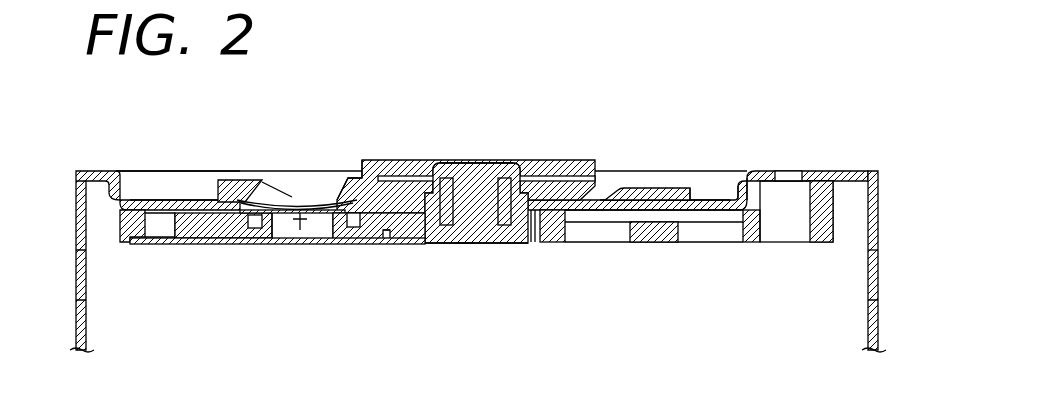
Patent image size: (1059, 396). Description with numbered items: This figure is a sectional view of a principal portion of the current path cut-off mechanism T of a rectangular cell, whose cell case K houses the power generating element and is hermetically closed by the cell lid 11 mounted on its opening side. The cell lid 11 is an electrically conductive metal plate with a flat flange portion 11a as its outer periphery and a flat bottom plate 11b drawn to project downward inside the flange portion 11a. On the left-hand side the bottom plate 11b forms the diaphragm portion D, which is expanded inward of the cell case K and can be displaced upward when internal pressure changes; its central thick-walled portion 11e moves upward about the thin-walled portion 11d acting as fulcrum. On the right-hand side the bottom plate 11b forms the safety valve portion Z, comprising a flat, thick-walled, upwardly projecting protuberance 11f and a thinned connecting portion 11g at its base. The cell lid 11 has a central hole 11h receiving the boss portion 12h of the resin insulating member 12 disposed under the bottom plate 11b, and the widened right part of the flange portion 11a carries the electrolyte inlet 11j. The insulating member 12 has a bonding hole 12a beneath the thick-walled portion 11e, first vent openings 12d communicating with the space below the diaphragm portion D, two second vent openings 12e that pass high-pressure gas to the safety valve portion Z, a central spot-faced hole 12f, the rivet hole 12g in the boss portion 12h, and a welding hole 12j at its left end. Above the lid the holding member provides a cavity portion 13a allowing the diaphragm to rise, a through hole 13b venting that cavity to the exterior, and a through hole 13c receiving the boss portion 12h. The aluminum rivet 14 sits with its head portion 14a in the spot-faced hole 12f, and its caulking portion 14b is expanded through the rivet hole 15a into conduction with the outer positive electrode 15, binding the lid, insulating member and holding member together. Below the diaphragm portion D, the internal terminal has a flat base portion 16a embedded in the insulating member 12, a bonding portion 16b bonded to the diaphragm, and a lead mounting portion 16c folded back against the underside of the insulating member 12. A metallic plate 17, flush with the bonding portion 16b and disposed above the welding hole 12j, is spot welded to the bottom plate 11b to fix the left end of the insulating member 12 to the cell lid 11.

The cell lid 11 is at (830, 169).
The flange portion 11a is at (97, 171).
The bottom plate 11b is at (157, 200).
The thin-walled portion 11d is at (328, 172).
The thick-walled portion 11e is at (313, 175).
The protuberance 11f is at (664, 186).
The connecting portion 11g is at (707, 180).
The central hole 11h is at (567, 244).
The electrolyte inlet 11j is at (786, 175).
The insulating member 12 is at (555, 250).
The bonding hole 12a is at (320, 245).
The first vent openings 12d is at (305, 246).
The second vent openings 12e is at (705, 240).
The spot-faced hole 12f is at (420, 246).
The rivet hole 12g is at (462, 246).
The boss portion 12h is at (505, 246).
The welding hole 12j is at (180, 228).
The cavity portion 13a is at (245, 180).
The through hole 13b is at (272, 195).
The through hole 13c is at (425, 170).
The rivet 14 is at (487, 246).
The head portion 14a is at (436, 246).
The caulking portion 14b is at (450, 168).
The outer positive electrode 15 is at (547, 160).
The rivet hole 15a is at (499, 163).
The base portion 16a is at (225, 245).
The bonding portion 16b is at (280, 245).
The lead mounting portion 16c is at (228, 247).
The metallic plate 17 is at (160, 243).
The diaphragm portion D is at (290, 200).
The cell case K is at (75, 290).
The current path cut-off mechanism T is at (128, 151).
The safety valve portion Z is at (636, 187).